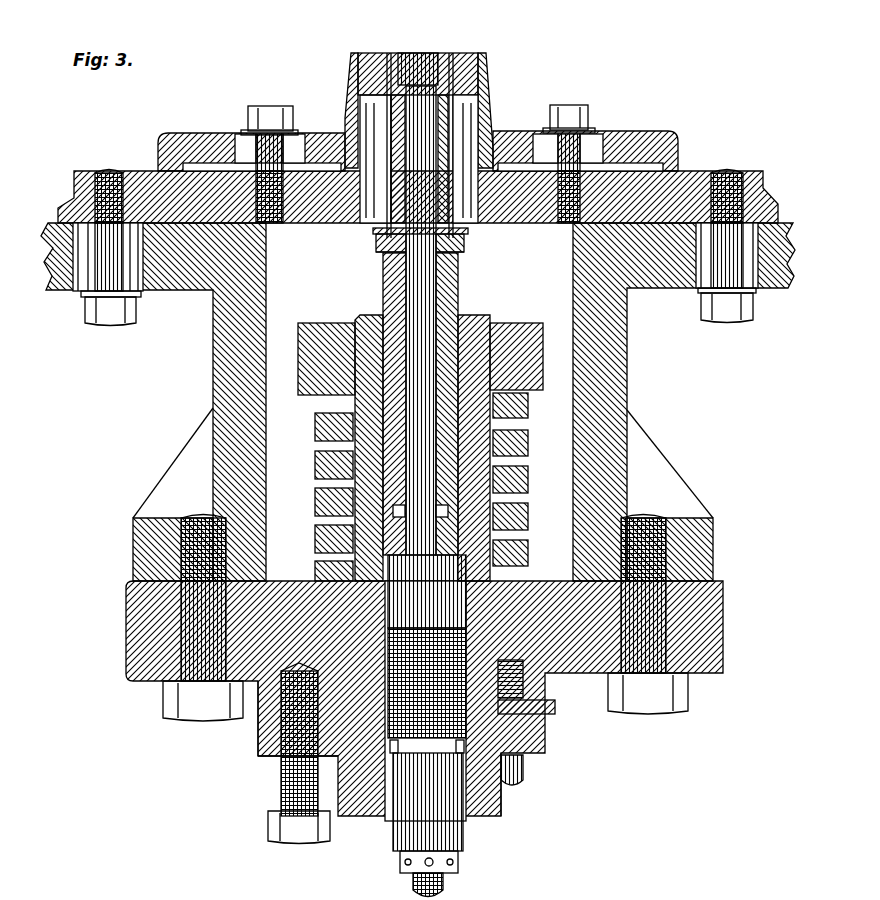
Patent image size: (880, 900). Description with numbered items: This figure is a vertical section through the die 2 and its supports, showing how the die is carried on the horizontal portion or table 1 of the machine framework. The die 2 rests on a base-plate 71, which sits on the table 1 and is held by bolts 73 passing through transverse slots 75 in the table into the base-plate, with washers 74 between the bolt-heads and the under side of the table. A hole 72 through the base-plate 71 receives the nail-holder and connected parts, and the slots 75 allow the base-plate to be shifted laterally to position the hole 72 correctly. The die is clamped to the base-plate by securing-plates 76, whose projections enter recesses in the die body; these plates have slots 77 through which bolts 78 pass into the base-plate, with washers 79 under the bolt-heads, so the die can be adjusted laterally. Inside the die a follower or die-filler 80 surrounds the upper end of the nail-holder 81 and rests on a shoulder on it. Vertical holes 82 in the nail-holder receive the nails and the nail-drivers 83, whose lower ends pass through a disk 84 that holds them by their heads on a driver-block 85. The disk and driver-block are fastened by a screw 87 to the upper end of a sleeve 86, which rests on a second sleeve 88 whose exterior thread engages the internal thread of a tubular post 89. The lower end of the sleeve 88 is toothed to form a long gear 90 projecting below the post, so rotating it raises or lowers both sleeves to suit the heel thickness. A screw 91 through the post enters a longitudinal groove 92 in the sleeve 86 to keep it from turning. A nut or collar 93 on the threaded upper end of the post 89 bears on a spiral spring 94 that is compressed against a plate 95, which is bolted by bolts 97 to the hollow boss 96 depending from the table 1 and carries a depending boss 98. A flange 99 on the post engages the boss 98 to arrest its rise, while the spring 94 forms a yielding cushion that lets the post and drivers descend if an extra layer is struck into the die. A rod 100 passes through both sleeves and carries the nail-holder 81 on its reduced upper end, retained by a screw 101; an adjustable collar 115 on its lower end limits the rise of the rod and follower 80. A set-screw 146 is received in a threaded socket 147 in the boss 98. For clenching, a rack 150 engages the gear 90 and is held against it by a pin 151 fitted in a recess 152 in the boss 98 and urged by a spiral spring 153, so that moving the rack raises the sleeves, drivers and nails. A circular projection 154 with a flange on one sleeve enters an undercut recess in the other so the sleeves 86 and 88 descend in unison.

The horizontal portion or table 1 is at (658, 278).
The die 2 is at (341, 62).
The base-plate 71 is at (66, 167).
The hole 72 is at (448, 218).
The bolts 73 is at (98, 317).
The washers 74 is at (80, 292).
The transverse slots 75 is at (58, 243).
The securing-plates 76 is at (194, 126).
The slots 77 is at (250, 135).
The bolts 78 is at (276, 80).
The washers 79 is at (284, 123).
The follower or die-filler 80 is at (362, 45).
The nail-holder 81 is at (456, 112).
The holes 82 is at (381, 45).
The nail-drivers 83 is at (372, 222).
The disk 84 is at (378, 238).
The driver-block 85 is at (452, 255).
The sleeve 86 is at (370, 292).
The screw 87 is at (377, 262).
The second sleeve 88 is at (400, 503).
The tubular post 89 is at (470, 309).
The gear 90 is at (462, 823).
The screw 91 is at (520, 418).
The longitudinal groove 92 is at (520, 456).
The nut or collar 93 is at (536, 343).
The spiral spring 94 is at (521, 512).
The plate 95 is at (590, 668).
The hollow boss 96 is at (203, 360).
The bolts 97 is at (187, 712).
The depending boss 98 is at (255, 742).
The flange 99 is at (275, 783).
The rod 100 is at (404, 876).
The screw 101 is at (418, 45).
The adjustable collar 115 is at (450, 852).
The set-screw 146 is at (268, 832).
The threaded socket 147 is at (268, 690).
The rack 150 is at (500, 782).
The pin 151 is at (515, 758).
The recess 152 is at (530, 699).
The spiral spring 153 is at (515, 668).
The circular projection 154 is at (332, 472).